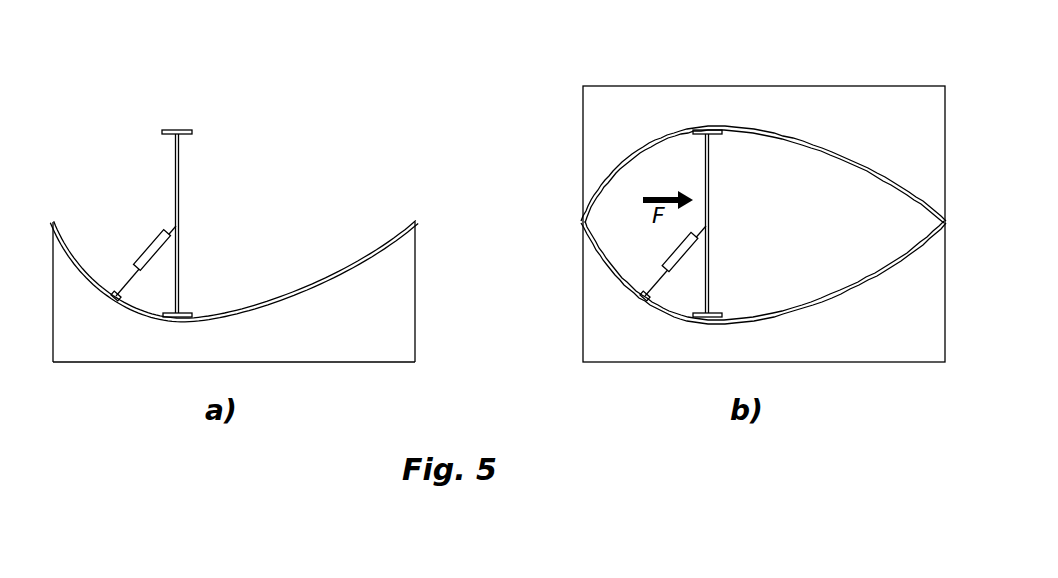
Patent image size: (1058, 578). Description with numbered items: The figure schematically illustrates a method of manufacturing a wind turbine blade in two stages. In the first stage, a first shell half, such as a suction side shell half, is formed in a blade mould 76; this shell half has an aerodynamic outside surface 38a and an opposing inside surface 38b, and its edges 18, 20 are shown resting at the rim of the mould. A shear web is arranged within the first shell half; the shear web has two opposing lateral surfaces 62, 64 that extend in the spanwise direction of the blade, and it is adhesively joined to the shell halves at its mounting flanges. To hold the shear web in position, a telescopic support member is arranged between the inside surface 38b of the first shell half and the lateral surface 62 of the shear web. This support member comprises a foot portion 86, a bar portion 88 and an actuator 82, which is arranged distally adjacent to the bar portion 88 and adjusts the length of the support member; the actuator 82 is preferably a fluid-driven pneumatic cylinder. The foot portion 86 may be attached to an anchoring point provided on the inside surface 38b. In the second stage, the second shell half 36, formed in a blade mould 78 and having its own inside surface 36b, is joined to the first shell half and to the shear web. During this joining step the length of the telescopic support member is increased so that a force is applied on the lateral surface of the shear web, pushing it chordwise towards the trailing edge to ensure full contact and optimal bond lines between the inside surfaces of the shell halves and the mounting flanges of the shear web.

The first edge of sail 18 is at (53, 222).
The second edge of sail 20 is at (417, 222).
The second shell half 36 is at (763, 178).
The upper sail layer 36b is at (663, 128).
The aerodynamic outside surface 38a is at (316, 296).
The inside surface 38b is at (270, 303).
The lateral surface 62 is at (188, 202).
The lateral surface 64 is at (181, 152).
The blade mould 76 is at (68, 332).
The blade mould 78 is at (792, 108).
The actuator 82 is at (156, 253).
The foot portion 86 is at (112, 292).
The bar portion 88 is at (122, 283).